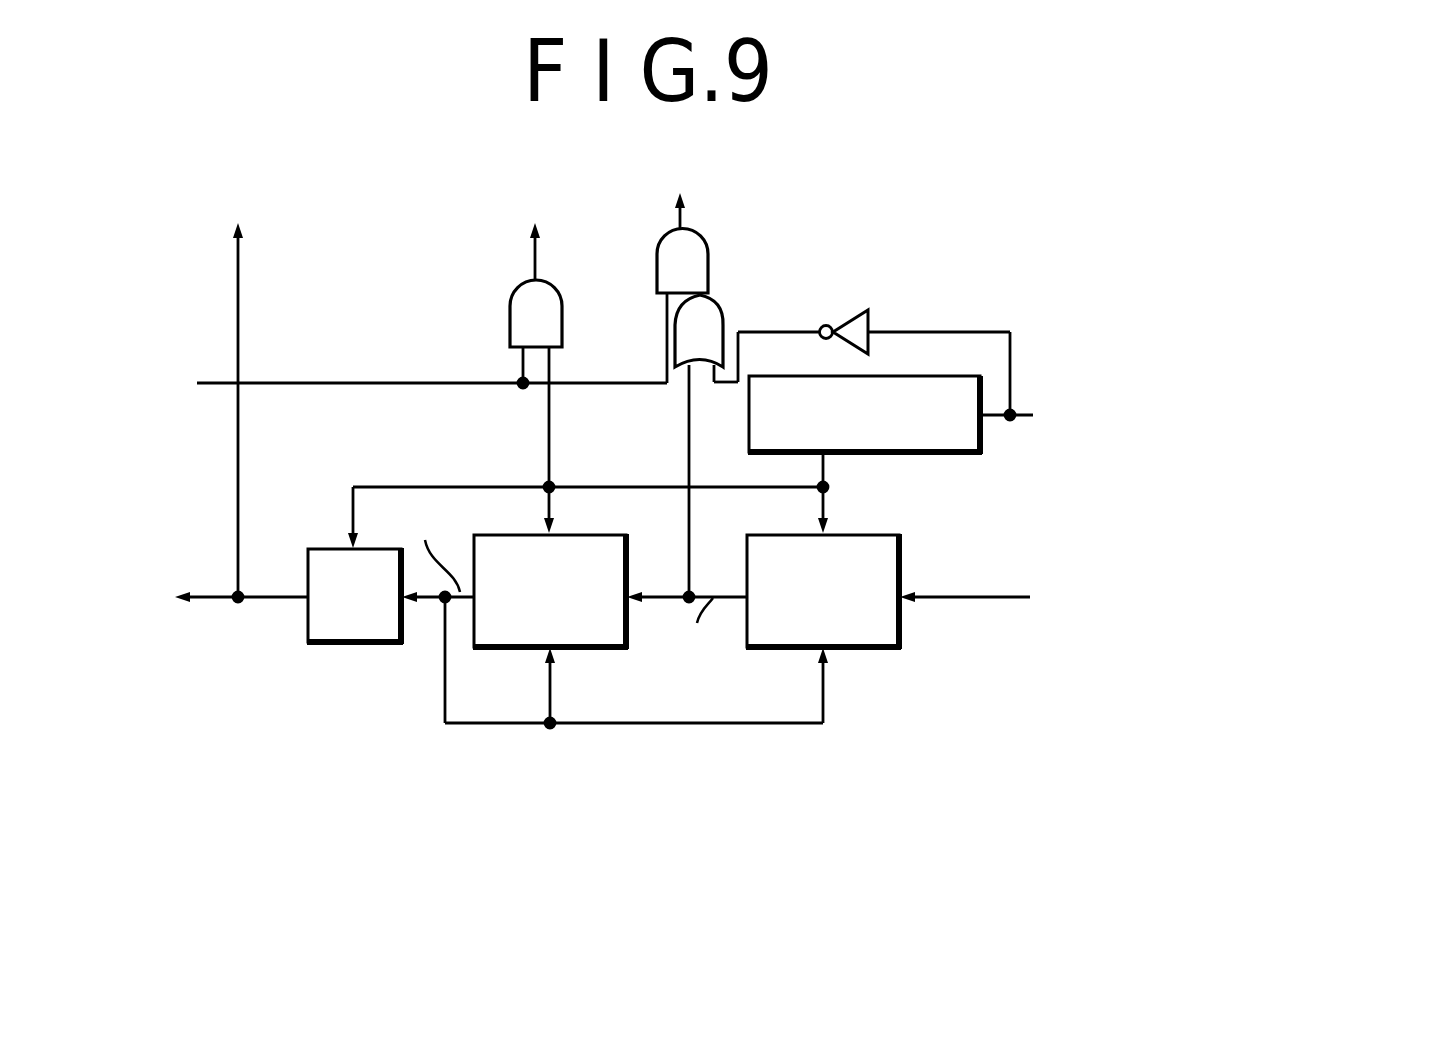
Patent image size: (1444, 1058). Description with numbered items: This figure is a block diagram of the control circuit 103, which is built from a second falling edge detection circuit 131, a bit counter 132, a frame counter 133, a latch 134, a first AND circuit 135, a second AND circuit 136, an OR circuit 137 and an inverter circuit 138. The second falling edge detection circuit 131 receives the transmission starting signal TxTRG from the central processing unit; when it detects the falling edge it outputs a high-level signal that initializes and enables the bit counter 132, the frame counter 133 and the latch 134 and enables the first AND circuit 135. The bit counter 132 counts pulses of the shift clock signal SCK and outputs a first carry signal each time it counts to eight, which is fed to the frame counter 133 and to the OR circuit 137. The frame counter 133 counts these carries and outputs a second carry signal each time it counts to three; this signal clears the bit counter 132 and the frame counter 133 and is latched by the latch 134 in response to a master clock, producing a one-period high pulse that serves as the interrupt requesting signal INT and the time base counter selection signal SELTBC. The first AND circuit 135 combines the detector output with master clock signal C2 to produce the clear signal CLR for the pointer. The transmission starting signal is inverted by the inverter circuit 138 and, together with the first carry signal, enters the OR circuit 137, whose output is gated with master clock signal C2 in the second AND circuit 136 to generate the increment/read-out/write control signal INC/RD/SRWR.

The control circuit 103 is at (488, 759).
The second falling edge detection circuit 131 is at (929, 453).
The bit counter 132 is at (865, 635).
The frame counter 133 is at (593, 638).
The latch 134 is at (340, 628).
The first AND circuit 135 is at (527, 327).
The second AND circuit 136 is at (695, 253).
The OR circuit 137 is at (702, 325).
The inverter circuit 138 is at (866, 313).